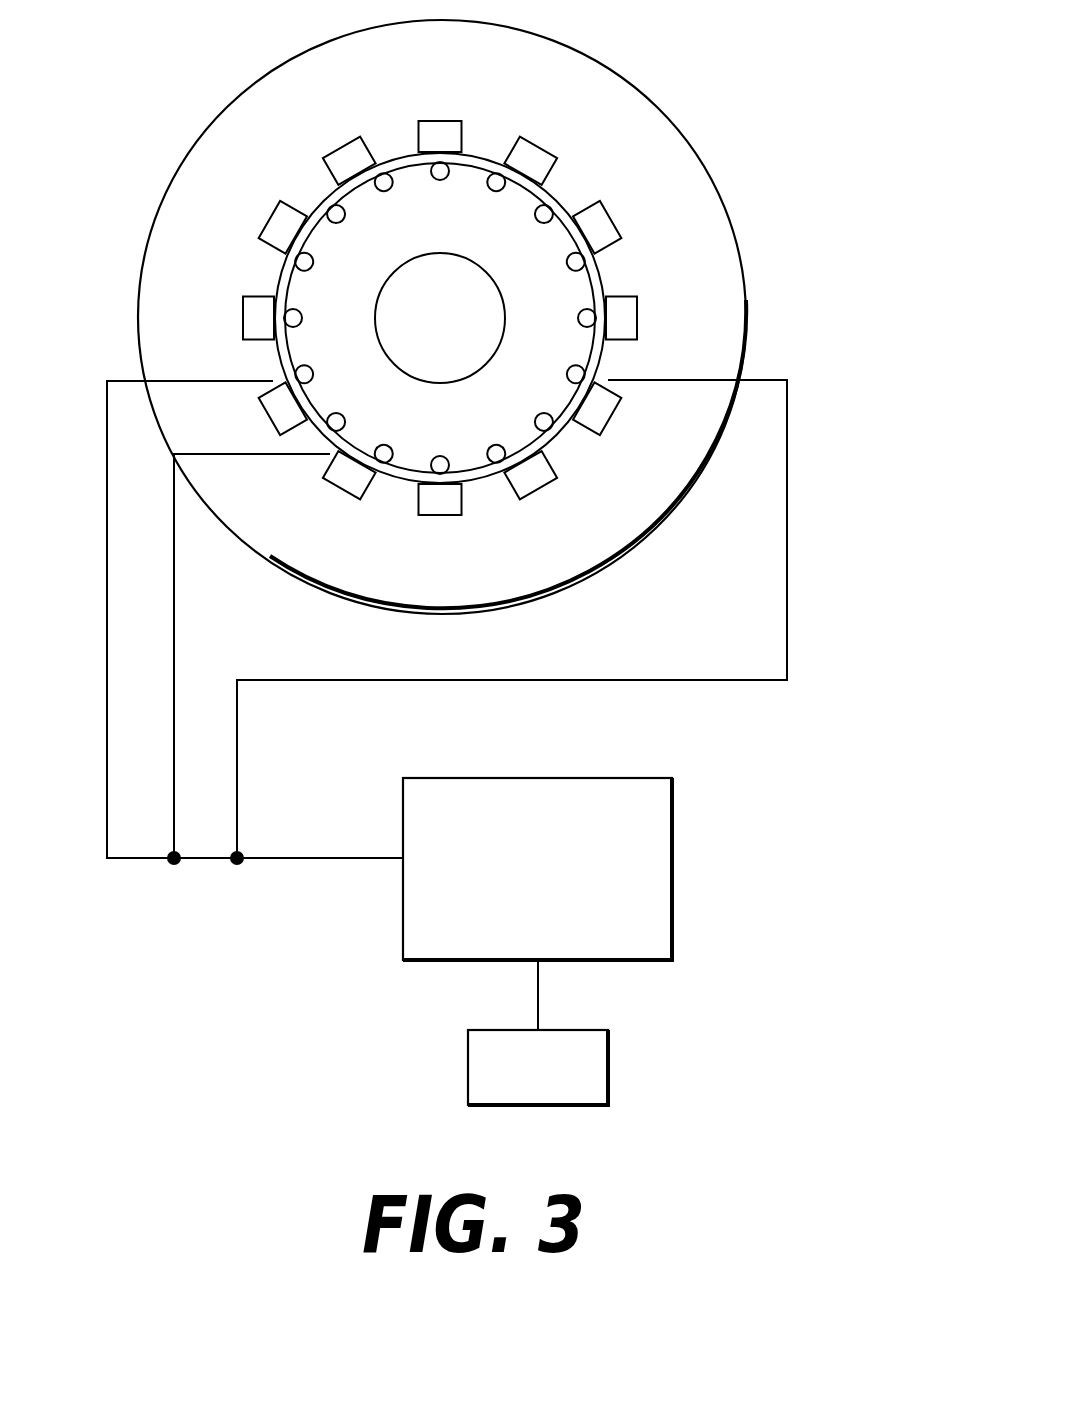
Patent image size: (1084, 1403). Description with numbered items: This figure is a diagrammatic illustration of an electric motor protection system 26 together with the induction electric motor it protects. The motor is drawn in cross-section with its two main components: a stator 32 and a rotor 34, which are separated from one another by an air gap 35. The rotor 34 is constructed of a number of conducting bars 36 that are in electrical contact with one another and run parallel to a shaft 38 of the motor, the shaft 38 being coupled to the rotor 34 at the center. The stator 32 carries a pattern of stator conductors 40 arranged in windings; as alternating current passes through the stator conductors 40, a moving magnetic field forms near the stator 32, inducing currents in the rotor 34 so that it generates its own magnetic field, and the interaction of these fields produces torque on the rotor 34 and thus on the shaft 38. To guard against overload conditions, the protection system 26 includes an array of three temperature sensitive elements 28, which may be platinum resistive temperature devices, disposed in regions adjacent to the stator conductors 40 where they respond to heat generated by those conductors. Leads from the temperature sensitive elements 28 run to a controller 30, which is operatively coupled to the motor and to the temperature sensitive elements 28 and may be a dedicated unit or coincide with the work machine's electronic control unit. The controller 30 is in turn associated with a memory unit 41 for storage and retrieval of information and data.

The electric motor protection system 26 is at (262, 1008).
The temperature sensitive element 28 is at (272, 378).
The controller 30 is at (655, 871).
The stator 32 is at (619, 106).
The rotor 34 is at (565, 296).
The air gap 35 is at (560, 201).
The conducting bars 36 is at (418, 163).
The shaft 38 is at (406, 262).
The stator conductors 40 is at (520, 150).
The memory unit 41 is at (595, 1071).